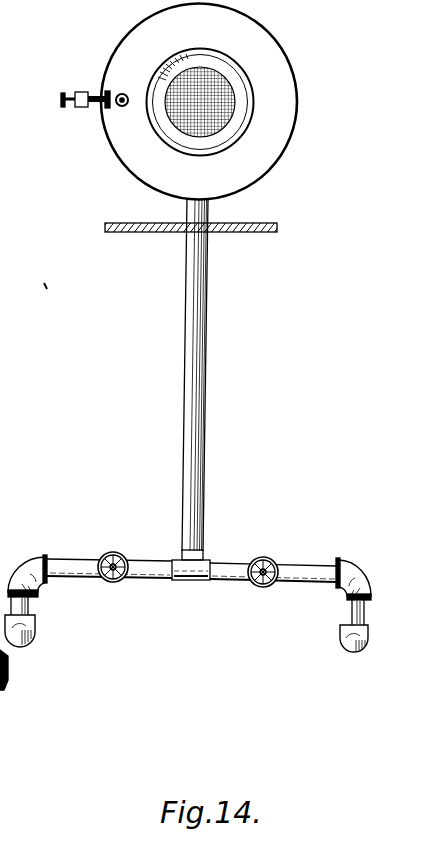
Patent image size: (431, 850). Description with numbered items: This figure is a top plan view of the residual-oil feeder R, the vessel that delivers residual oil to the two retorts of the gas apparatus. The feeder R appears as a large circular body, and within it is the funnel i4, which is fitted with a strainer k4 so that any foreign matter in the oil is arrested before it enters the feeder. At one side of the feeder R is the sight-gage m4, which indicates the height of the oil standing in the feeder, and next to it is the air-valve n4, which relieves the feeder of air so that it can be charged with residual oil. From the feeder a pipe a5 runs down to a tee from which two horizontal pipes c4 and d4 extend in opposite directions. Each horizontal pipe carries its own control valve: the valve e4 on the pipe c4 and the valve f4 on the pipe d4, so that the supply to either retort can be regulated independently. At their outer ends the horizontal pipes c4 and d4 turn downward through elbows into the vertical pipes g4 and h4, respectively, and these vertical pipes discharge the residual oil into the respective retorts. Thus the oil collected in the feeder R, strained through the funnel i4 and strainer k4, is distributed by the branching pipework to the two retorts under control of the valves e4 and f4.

The residual-oil feeder R is at (205, 102).
The funnel i4 is at (206, 102).
The strainer k4 is at (213, 132).
The sight-gage m4 is at (85, 88).
The air-valve n4 is at (125, 90).
The supply pipe a5 is at (203, 503).
The horizontal pipe c4 is at (153, 563).
The horizontal pipe d4 is at (273, 564).
The valve e4 is at (113, 559).
The valve f4 is at (273, 565).
The vertical pipe g4 is at (34, 601).
The vertical pipe h4 is at (338, 605).